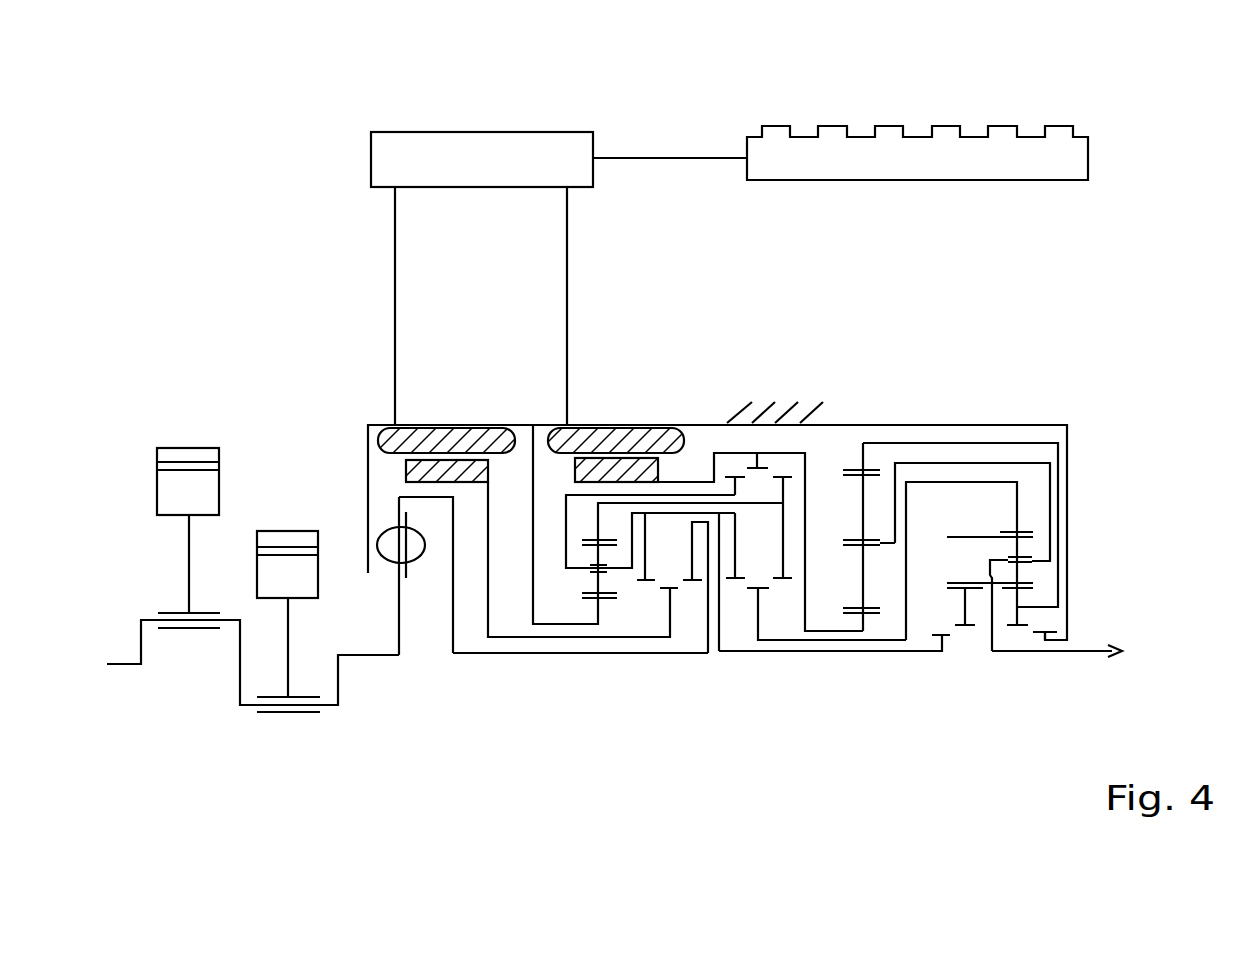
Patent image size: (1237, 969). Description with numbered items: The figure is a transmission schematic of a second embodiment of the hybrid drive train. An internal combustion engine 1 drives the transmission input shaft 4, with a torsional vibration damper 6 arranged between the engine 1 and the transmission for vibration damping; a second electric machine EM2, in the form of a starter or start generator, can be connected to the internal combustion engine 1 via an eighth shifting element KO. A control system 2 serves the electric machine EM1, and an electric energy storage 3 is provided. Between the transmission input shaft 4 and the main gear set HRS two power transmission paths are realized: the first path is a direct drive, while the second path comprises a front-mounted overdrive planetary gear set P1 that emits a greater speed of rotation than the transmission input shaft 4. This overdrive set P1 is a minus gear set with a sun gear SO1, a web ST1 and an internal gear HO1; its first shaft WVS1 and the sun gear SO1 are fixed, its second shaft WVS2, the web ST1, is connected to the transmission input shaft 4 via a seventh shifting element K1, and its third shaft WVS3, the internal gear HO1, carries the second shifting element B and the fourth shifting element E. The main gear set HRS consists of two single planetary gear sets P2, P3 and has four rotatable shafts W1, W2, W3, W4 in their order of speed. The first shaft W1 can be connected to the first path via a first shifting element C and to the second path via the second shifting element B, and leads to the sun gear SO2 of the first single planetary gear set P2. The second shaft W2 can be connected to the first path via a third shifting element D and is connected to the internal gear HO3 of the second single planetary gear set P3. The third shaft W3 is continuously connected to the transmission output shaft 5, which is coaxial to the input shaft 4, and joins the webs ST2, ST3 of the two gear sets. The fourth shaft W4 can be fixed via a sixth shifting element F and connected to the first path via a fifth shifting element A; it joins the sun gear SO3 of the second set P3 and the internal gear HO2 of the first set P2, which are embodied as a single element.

The internal combustion engine 1 is at (237, 398).
The control system 2 is at (382, 162).
The electric energy storage 3 is at (1023, 152).
The transmission input shaft 4 is at (465, 657).
The transmission output shaft 5 is at (998, 653).
The torsional vibration damper 6 is at (388, 552).
The electric machine EM1 is at (626, 408).
The second electric machine EM2 is at (436, 412).
The internal gear HO1 is at (588, 537).
The internal gear of the first single planetary gear set HO2 is at (857, 473).
The internal gear of the second single planetary gear set HO3 is at (1022, 530).
The first shaft of the overdrive planetary gear set WVS1 is at (532, 558).
The second shaft of the overdrive planetary gear set WVS2 is at (570, 495).
The third shaft of the overdrive planetary gear set WVS3 is at (767, 503).
The web ST1 is at (590, 571).
The web of the first single planetary gear set ST2 is at (853, 540).
The web of the second planetary gear set ST3 is at (1033, 562).
The sun gear SO1 is at (609, 600).
The sun gear of the first single planetary gear set SO2 is at (879, 614).
The sun gear of the second single gear set SO3 is at (1022, 596).
The seventh shifting element K1 is at (655, 584).
The eighth shifting element KO is at (695, 583).
The fifth shifting element A is at (947, 640).
The second shifting element B is at (782, 477).
The first shifting element C is at (735, 477).
The third shifting element D is at (738, 580).
The fourth shifting element E is at (773, 590).
The sixth shifting element F is at (1036, 641).
The first shaft W1 is at (843, 614).
The second shaft W2 is at (882, 641).
The third shaft W3 is at (1025, 552).
The fourth shaft W4 is at (1060, 570).
The overdrive planetary gear set P1 is at (596, 375).
The first single planetary gear set P2 is at (862, 375).
The second single planetary gear set P3 is at (1015, 375).
The main gear set HRS is at (1035, 290).